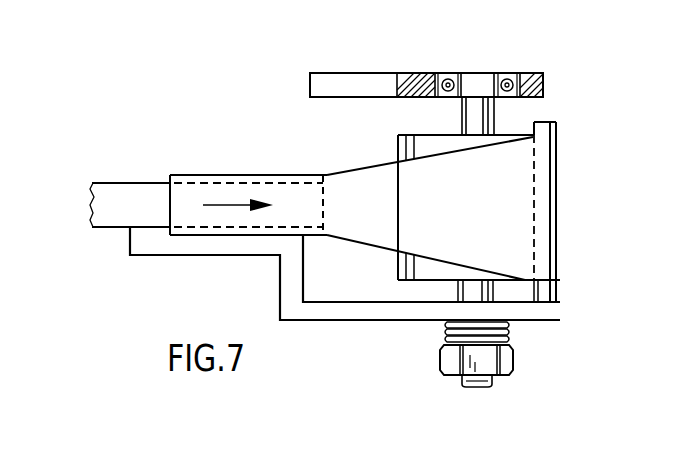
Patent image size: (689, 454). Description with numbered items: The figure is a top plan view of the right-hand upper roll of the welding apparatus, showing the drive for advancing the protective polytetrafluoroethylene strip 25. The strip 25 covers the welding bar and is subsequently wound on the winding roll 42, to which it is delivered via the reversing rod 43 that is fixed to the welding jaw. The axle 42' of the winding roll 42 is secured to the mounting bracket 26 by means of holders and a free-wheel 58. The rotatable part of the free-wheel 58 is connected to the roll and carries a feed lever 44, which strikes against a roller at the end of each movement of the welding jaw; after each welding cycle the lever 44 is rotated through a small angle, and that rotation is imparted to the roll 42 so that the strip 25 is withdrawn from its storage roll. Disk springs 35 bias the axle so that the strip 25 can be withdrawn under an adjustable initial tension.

The polytetrafluoroethylene strip 25 is at (470, 215).
The holder / mounting bracket 26 is at (103, 218).
The disk springs 35 is at (507, 335).
The winding roll 42 is at (466, 249).
The axle of the winding roll 42' is at (458, 76).
The reversing rod 43 is at (556, 290).
The feed lever 44 is at (323, 82).
The free-wheel 58 is at (507, 83).